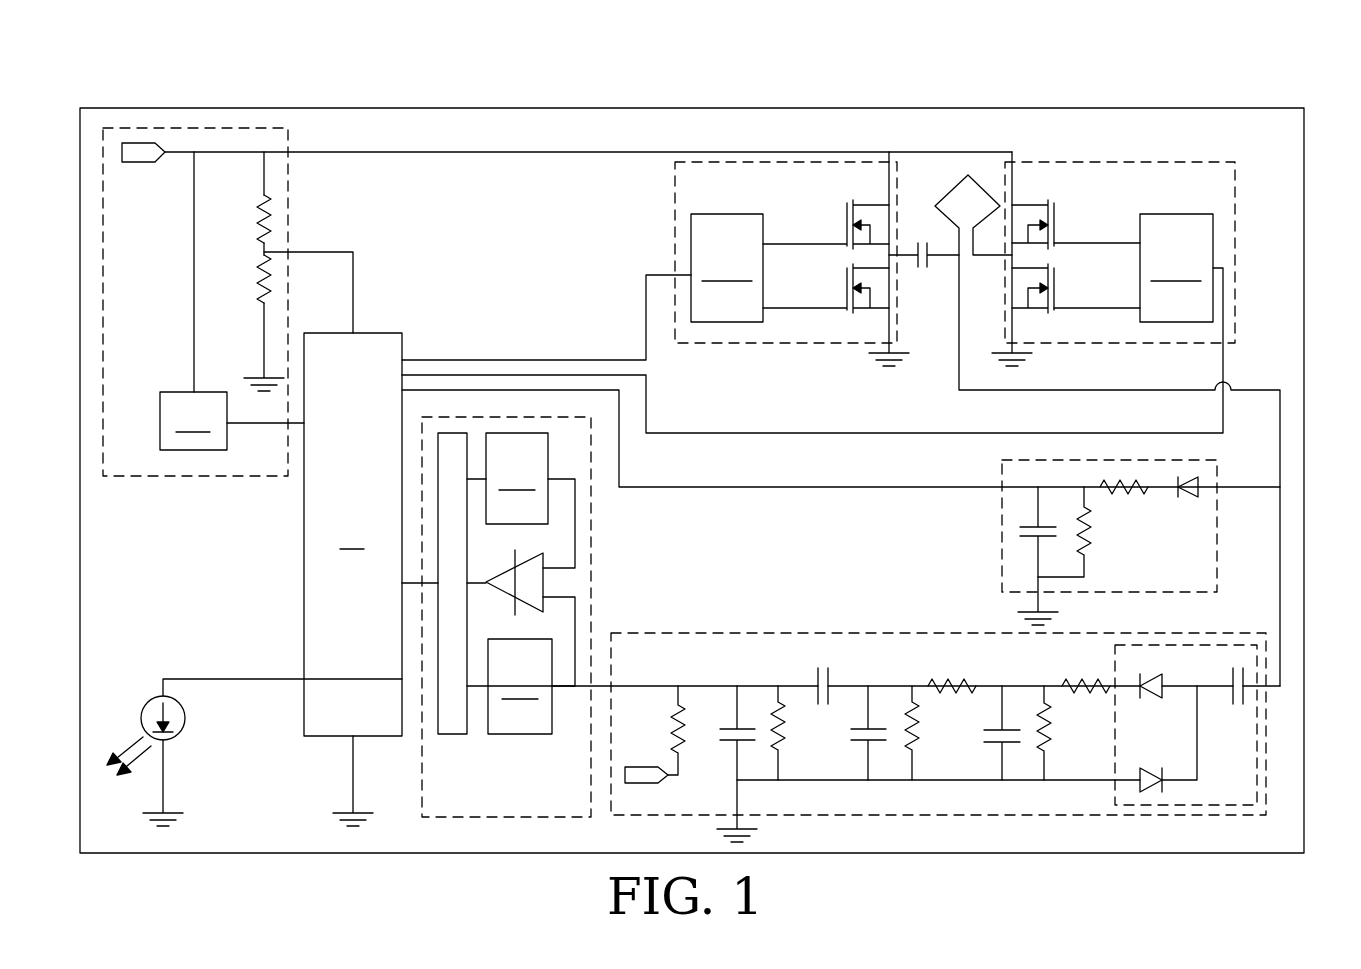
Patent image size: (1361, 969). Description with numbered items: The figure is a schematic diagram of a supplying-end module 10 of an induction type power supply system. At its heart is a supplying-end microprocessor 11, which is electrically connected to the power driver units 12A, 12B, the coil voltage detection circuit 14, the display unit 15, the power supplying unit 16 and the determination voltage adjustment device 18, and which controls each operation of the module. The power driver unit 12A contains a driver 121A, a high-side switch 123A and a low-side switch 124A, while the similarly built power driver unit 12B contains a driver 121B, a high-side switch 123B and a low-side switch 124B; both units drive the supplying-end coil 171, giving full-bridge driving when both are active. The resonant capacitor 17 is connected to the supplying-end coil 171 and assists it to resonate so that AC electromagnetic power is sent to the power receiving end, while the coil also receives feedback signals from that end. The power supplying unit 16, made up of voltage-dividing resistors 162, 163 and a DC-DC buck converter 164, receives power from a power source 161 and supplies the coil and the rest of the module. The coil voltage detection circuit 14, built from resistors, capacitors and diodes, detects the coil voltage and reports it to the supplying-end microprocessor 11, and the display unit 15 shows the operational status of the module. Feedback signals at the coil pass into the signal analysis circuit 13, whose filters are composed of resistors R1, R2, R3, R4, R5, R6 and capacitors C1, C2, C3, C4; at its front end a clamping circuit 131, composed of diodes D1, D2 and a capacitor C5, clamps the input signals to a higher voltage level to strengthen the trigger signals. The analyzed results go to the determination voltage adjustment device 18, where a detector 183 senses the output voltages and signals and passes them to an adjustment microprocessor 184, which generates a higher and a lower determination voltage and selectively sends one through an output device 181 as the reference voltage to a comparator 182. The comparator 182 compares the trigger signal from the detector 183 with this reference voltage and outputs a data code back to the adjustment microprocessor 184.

The supplying-end module 10 is at (1240, 86).
The supplying-end microprocessor 11 is at (353, 534).
The power driver unit 12A is at (792, 276).
The power driver unit 12B is at (1141, 259).
The driver 121A is at (727, 268).
The driver 121B is at (1176, 268).
The high-side switch 123A is at (840, 221).
The low-side switch 124A is at (840, 292).
The high-side switch 123B is at (1059, 221).
The low-side switch 124B is at (1059, 294).
The signal analysis circuit 13 is at (916, 705).
The clamping circuit 131 is at (1191, 694).
The coil voltage detection circuit 14 is at (1002, 533).
The display unit 15 is at (186, 718).
The power supplying unit 16 is at (557, 470).
The power source 161 is at (137, 163).
The voltage-dividing resistor 162 is at (262, 216).
The voltage-dividing resistor 163 is at (262, 278).
The DC-DC buck converter 164 is at (193, 421).
The resonant capacitor 17 is at (926, 270).
The supplying-end coil 171 is at (953, 192).
The determination voltage adjustment device 18 is at (538, 617).
The output device 181 is at (517, 478).
The comparator 182 is at (500, 576).
The detector 183 is at (520, 686).
The adjustment microprocessor 184 is at (452, 735).
The resistor R1 is at (661, 730).
The resistor R2 is at (794, 733).
The resistor R3 is at (928, 733).
The resistor R4 is at (1061, 733).
The resistor R5 is at (952, 671).
The resistor R6 is at (1086, 671).
The capacitor C1 is at (728, 764).
The capacitor C2 is at (859, 733).
The capacitor C3 is at (991, 733).
The capacitor C4 is at (823, 671).
The capacitor C5 is at (1233, 699).
The diode D1 is at (1144, 700).
The diode D2 is at (1159, 767).